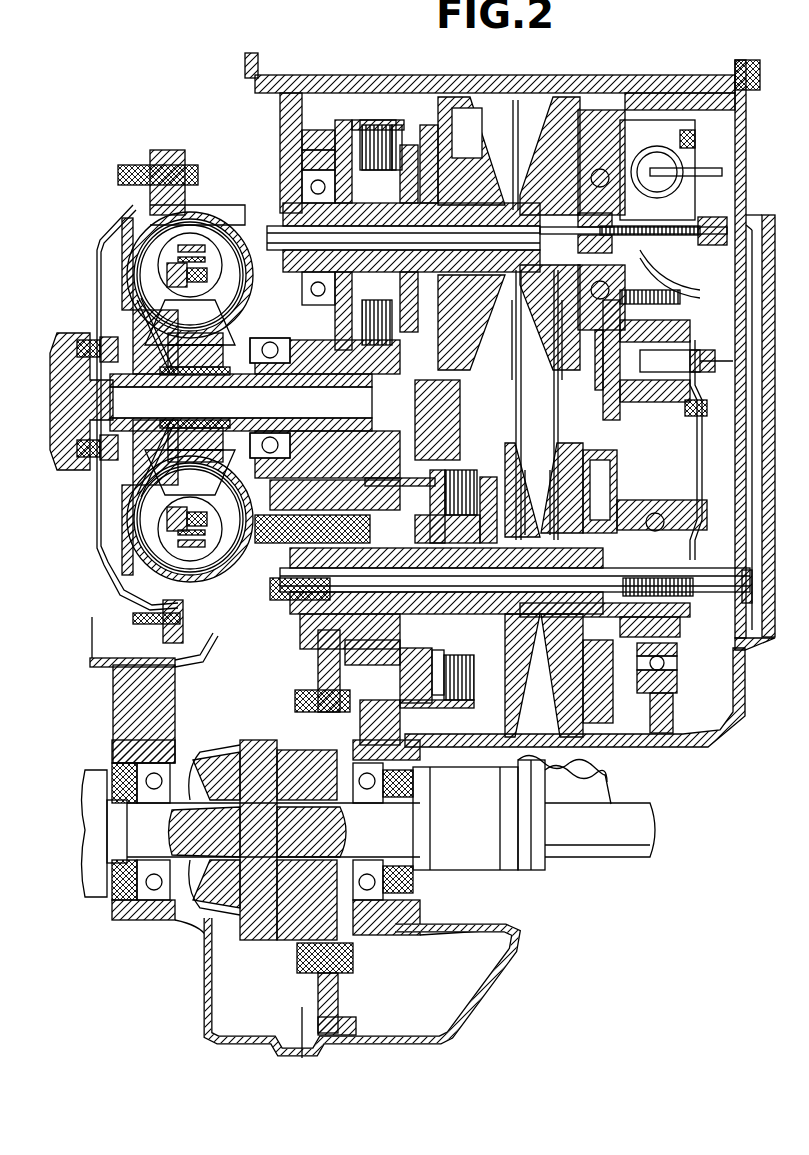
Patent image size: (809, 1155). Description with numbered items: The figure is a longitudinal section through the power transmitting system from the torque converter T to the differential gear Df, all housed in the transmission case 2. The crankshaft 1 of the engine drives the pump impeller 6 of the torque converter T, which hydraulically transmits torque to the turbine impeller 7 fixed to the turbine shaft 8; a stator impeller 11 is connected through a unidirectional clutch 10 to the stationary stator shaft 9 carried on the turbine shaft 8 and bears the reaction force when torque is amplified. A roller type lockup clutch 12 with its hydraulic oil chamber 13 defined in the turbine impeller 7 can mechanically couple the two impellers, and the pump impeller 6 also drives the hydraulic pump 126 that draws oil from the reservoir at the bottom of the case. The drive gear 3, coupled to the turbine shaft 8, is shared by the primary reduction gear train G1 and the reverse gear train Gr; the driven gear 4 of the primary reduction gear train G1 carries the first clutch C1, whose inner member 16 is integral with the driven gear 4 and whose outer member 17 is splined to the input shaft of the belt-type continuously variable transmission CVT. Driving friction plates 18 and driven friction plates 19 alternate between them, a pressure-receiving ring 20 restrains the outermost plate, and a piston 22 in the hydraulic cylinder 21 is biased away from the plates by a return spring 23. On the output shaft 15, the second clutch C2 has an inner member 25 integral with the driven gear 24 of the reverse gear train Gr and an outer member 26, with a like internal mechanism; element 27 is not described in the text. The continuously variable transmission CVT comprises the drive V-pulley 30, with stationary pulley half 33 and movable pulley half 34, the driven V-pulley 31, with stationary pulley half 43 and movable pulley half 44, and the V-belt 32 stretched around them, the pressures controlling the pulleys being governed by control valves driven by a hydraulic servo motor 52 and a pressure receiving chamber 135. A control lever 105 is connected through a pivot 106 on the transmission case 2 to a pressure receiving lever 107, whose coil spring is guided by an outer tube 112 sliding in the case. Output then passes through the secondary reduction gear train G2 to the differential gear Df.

The torque converter T is at (158, 150).
The crankshaft 1 is at (70, 336).
The transmission case 2 is at (600, 92).
The drive gear 3 is at (405, 470).
The driven gear 4 is at (420, 165).
The pump impeller 6 is at (198, 359).
The turbine impeller 7 is at (167, 484).
The turbine shaft 8 is at (325, 408).
The stator shaft 9 is at (255, 385).
The unidirectional clutch 10 is at (195, 381).
The stator impeller 11 is at (204, 375).
The lockup clutch 12 is at (205, 252).
The hydraulic oil chamber 13 is at (172, 272).
The output shaft 15 is at (366, 613).
The inner member 16 is at (406, 228).
The outer member 17 is at (348, 125).
The driving friction plates 18 is at (345, 318).
The driven friction plates 19 is at (418, 304).
The pressure-receiving ring 20 is at (418, 413).
The hydraulic cylinder 21 is at (340, 132).
The piston 22 is at (414, 341).
The return spring 23 is at (509, 408).
The driven gear 24 is at (400, 690).
The inner member 25 is at (446, 506).
The outer member 26 is at (490, 480).
The sheave hub 27 is at (490, 512).
The drive V-pulley 30 is at (531, 405).
The driven V-pulley 31 is at (566, 405).
The V-belt 32 is at (540, 170).
The stationary pulley half 33 is at (568, 370).
The movable pulley half 34 is at (530, 378).
The stationary pulley half 43 is at (525, 470).
The movable pulley half 44 is at (565, 455).
The hydraulic servo motor 52 is at (706, 450).
The control lever 105 is at (722, 358).
The pivot 106 is at (695, 375).
The pressure receiving lever 107 is at (700, 170).
The outer tube 112 is at (652, 150).
The hydraulic pump 126 is at (327, 502).
The pressure receiving chamber 135 is at (462, 414).
The first clutch C1 is at (362, 100).
The second clutch C2 is at (455, 706).
The belt-type continuously variable transmission CVT is at (522, 105).
The primary reduction gear train G1 is at (425, 118).
The secondary reduction gear train G2 is at (308, 666).
The reverse gear train Gr is at (396, 712).
The differential gear Df is at (250, 950).